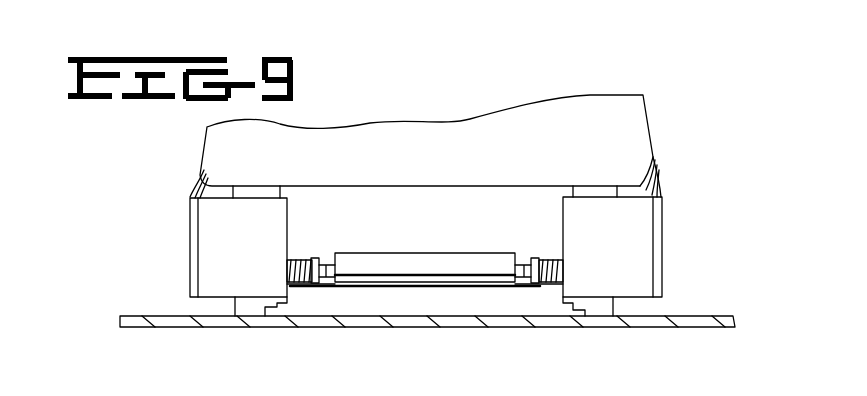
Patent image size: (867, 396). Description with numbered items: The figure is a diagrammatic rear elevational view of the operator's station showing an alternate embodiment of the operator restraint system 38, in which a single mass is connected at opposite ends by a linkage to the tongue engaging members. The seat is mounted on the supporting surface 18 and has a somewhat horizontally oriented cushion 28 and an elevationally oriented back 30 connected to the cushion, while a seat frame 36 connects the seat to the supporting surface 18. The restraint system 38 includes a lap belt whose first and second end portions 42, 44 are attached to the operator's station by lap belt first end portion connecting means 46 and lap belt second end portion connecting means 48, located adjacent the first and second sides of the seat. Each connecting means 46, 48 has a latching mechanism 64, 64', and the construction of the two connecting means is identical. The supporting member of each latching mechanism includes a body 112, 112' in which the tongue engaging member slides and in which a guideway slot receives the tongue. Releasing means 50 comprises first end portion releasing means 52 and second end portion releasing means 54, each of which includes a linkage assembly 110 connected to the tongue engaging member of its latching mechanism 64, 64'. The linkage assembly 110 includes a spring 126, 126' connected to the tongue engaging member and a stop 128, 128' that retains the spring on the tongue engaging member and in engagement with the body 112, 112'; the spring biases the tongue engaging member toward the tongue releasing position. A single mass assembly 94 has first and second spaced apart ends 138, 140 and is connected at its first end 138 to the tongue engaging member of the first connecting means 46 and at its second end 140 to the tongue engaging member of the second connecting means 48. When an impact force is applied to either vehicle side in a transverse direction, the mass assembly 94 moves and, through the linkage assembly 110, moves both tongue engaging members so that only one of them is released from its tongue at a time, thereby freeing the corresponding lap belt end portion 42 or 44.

The supporting surface 18 is at (687, 318).
The seat cushion 28 is at (428, 221).
The seat back 30 is at (440, 160).
The seat frame 36 is at (265, 190).
The operator restraint system 38 is at (495, 88).
The lap belt first end portion 42 is at (197, 168).
The lap belt second end portion 44 is at (658, 163).
The lap belt first end portion connecting means 46 is at (163, 213).
The lap belt second end portion connecting means 48 is at (665, 213).
The releasing means 50 is at (647, 82).
The first end portion releasing means 52 is at (297, 305).
The second end portion releasing means 54 is at (550, 305).
The latching mechanism 64 is at (322, 211).
The latching mechanism 64' is at (524, 205).
The mass assembly 94 is at (442, 276).
The linkage assembly 110 is at (460, 213).
The body 112 is at (199, 247).
The body 112' is at (648, 247).
The spring 126 is at (326, 301).
The spring 126' is at (514, 301).
The stop 128 is at (333, 250).
The stop 128' is at (579, 250).
The first end of mass assembly 138 is at (333, 254).
The second end of mass assembly 140 is at (520, 255).